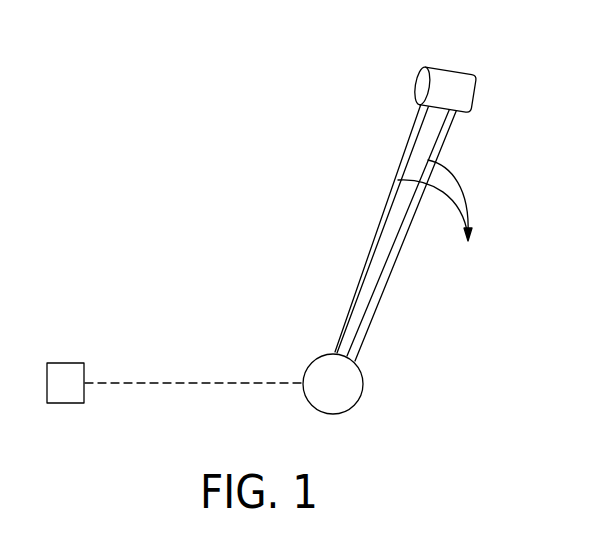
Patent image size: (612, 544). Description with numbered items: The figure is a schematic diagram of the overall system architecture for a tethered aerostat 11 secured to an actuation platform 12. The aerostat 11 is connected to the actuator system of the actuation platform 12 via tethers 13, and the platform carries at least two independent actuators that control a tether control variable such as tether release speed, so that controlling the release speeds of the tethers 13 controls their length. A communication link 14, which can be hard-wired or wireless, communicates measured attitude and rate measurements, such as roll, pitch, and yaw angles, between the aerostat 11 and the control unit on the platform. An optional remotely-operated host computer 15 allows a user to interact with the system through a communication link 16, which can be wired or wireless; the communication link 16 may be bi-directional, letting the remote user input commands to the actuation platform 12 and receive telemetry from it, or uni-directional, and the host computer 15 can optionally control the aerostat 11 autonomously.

The tethered aerostat 11 is at (450, 73).
The actuation platform 12 is at (364, 384).
The tethers 13 is at (385, 218).
The communication link 14 is at (439, 214).
The remotely-operated host computer 15 is at (65, 363).
The communication link 16 is at (188, 383).